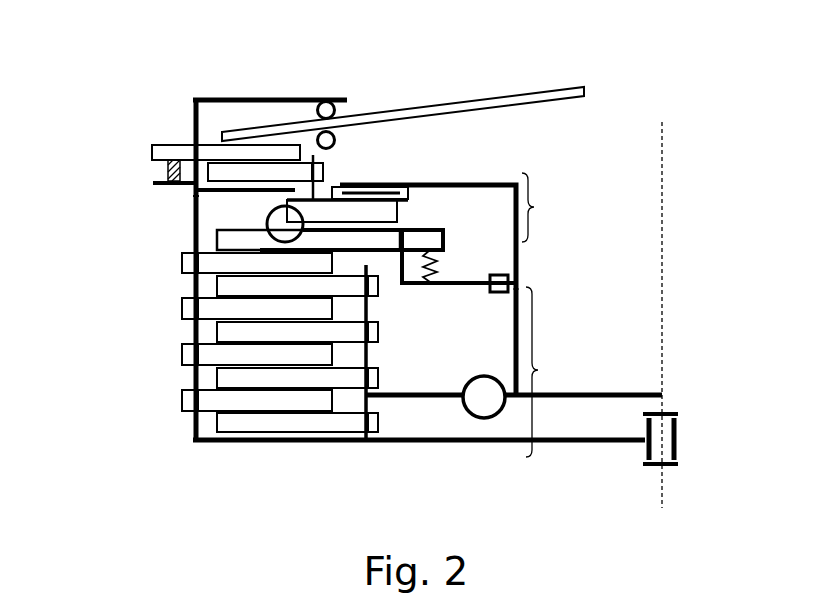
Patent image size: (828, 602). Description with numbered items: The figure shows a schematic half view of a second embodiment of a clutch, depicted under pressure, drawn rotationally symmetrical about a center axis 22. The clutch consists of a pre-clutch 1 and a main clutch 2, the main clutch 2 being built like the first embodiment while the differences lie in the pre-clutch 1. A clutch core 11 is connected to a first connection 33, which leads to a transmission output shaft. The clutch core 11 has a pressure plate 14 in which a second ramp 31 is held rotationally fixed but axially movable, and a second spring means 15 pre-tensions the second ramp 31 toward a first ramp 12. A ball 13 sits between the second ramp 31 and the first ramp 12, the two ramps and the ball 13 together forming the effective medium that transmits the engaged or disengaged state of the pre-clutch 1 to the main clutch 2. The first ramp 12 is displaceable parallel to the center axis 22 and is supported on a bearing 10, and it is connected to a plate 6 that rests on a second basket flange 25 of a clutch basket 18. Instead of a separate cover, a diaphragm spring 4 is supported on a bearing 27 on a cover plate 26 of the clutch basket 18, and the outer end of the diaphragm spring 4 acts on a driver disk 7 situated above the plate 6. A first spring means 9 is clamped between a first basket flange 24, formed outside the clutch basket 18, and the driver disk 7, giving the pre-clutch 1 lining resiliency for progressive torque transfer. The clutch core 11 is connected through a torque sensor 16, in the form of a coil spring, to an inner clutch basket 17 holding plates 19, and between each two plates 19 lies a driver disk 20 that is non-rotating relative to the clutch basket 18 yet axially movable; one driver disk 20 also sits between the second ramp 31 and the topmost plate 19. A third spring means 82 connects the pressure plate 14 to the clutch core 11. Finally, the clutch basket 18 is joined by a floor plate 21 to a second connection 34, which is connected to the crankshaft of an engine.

The pre-clutch 1 is at (537, 207).
The main clutch 2 is at (583, 372).
The diaphragm spring 4 is at (490, 98).
The plate 6 is at (320, 160).
The driver disk 7 is at (178, 148).
The first spring means 9 is at (170, 170).
The bearing 10 is at (394, 188).
The clutch core 11 is at (443, 182).
The first ramp 12 is at (387, 210).
The ball 13 is at (267, 230).
The pressure plate 14 is at (517, 307).
The second spring means 15 is at (438, 263).
The torque sensor 16 is at (485, 405).
The inner clutch basket 17 is at (370, 400).
The clutch basket 18 is at (195, 233).
The plates 19 is at (378, 285).
The driver disk 20 is at (182, 305).
The floor plate 21 is at (305, 443).
The center axis 22 is at (662, 177).
The first basket flange 24 is at (160, 184).
The second basket flange 25 is at (195, 197).
The cover plate 26 is at (213, 100).
The bearing 27 is at (338, 108).
The second ramp 31 is at (440, 242).
The first connection 33 is at (665, 466).
The second connection 34 is at (644, 457).
The third spring means 82 is at (504, 276).